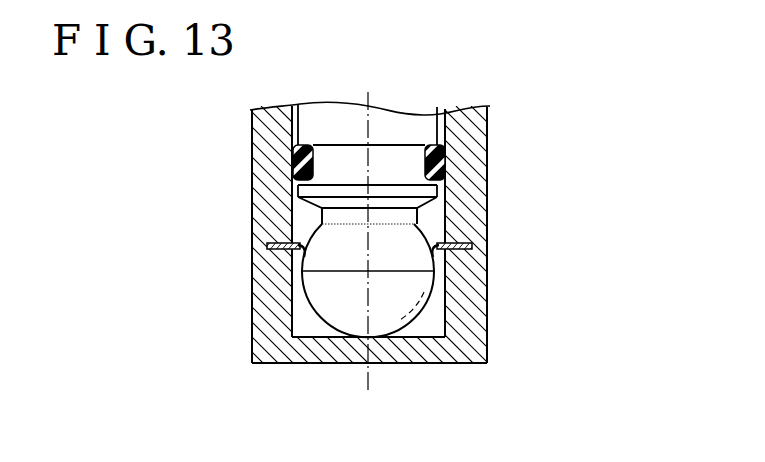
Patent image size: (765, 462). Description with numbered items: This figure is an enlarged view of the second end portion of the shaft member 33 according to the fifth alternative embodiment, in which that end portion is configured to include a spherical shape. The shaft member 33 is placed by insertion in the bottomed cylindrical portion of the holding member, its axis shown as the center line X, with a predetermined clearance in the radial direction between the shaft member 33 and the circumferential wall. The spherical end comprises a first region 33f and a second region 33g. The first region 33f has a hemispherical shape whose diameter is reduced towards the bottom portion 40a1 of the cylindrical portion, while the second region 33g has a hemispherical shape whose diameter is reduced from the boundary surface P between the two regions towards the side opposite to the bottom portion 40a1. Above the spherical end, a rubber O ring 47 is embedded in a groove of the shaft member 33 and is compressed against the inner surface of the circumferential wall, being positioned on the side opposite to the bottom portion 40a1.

The shaft member 33 is at (398, 123).
The second region 33g is at (318, 235).
The first region 33f is at (413, 297).
The bottom portion 40a1 is at (353, 350).
The O ring 47 is at (295, 157).
The boundary surface P is at (327, 272).
The axis X is at (365, 229).